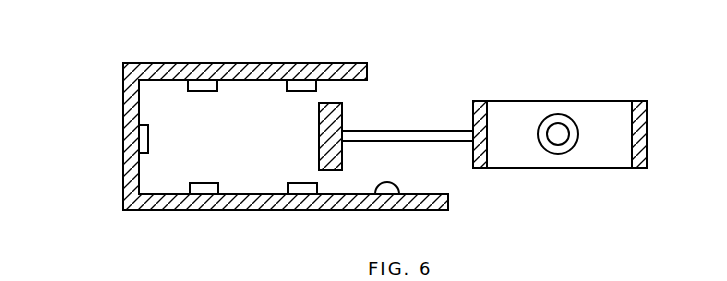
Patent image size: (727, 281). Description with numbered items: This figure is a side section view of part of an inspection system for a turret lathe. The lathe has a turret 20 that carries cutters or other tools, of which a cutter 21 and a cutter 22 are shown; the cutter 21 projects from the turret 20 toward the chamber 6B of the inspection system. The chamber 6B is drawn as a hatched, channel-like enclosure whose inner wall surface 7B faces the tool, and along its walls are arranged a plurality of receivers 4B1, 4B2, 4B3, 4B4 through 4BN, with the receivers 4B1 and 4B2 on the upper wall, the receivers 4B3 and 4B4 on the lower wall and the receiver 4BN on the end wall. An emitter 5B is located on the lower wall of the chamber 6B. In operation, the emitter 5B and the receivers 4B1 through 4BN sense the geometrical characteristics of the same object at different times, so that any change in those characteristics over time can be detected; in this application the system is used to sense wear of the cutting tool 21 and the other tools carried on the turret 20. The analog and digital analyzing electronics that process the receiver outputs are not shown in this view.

The receiver 4B1 is at (207, 50).
The receiver 4B2 is at (321, 50).
The receiver 4B3 is at (186, 229).
The receiver 4B4 is at (292, 227).
The receiver 4BN is at (91, 154).
The chamber 6B is at (285, 107).
The inner wall surface of housing 7B is at (366, 87).
The cutter 21 is at (370, 136).
The turret 20 is at (569, 110).
The cutter 22 is at (558, 162).
The emitter 5B is at (390, 182).